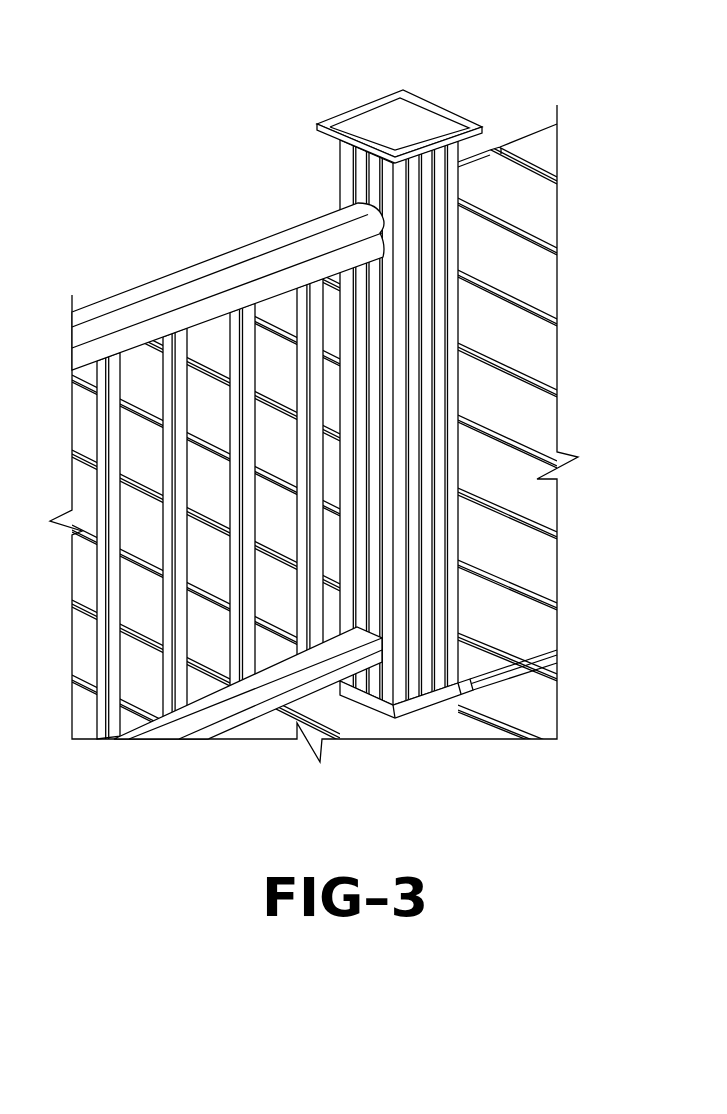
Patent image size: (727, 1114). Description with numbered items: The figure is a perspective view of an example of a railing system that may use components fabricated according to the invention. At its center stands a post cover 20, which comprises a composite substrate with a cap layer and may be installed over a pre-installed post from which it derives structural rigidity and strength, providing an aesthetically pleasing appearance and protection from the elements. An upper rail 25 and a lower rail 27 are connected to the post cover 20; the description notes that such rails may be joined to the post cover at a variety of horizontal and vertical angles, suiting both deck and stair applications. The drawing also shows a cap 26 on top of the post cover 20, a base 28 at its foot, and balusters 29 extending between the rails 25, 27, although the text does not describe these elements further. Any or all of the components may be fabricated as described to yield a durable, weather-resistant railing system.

The post cover 20 is at (433, 217).
The rail 25 is at (235, 257).
The post cap 26 is at (392, 128).
The rail 27 is at (355, 665).
The post base bracket 28 is at (452, 699).
The balusters 29 is at (315, 331).